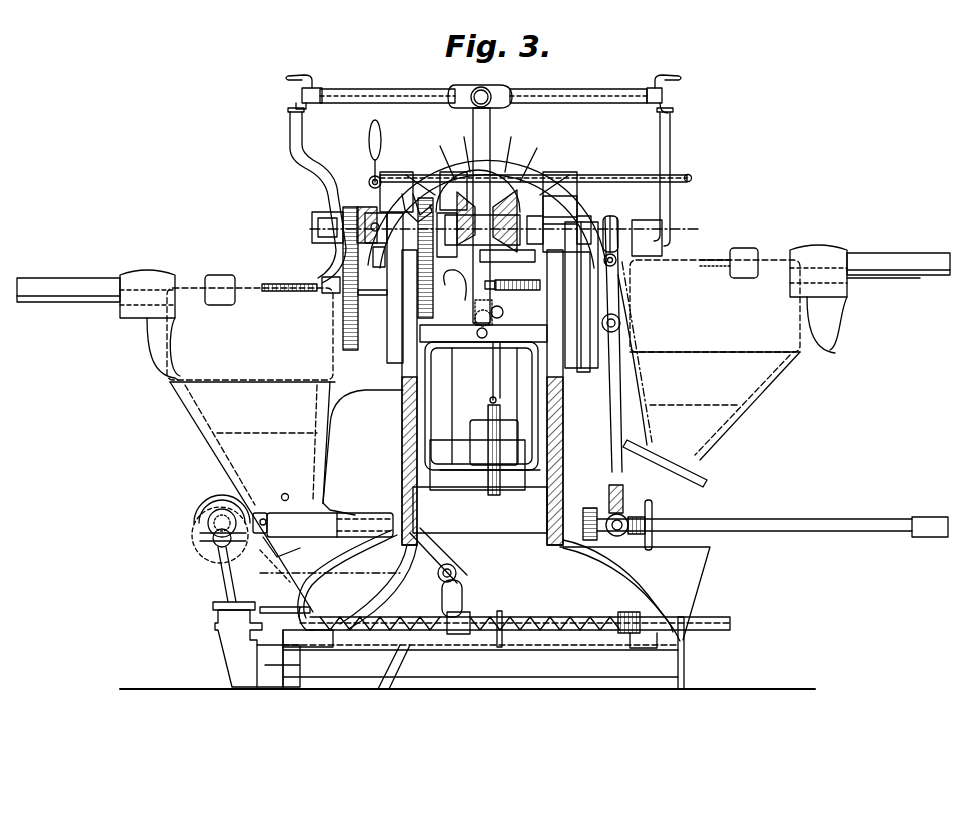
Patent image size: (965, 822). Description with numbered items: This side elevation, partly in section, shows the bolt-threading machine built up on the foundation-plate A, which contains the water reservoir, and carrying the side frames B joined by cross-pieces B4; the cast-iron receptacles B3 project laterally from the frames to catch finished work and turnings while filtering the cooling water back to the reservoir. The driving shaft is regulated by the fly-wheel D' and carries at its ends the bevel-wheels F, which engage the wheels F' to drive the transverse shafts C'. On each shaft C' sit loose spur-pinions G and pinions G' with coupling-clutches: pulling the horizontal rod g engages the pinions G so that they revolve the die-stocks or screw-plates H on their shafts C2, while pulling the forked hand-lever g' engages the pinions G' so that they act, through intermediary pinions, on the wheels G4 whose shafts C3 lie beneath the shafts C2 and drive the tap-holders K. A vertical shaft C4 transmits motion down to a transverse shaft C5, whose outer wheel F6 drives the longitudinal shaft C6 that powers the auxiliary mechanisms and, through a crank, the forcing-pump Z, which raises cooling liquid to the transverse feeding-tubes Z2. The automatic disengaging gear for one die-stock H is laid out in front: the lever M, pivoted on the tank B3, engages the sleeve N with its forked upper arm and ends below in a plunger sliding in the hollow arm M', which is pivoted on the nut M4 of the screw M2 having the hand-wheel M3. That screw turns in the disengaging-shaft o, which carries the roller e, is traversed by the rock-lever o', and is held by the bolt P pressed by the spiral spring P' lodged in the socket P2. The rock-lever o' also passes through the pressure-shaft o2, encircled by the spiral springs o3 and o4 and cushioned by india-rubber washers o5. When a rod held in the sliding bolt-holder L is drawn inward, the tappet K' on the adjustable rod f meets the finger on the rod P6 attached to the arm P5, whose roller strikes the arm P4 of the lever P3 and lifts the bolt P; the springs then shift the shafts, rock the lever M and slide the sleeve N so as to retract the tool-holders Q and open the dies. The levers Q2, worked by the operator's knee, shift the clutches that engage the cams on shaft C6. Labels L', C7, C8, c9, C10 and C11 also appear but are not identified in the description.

The forcing-pump Z is at (362, 386).
The transverse feeding-tube Z2 is at (483, 96).
The fly-wheel D' is at (487, 202).
The horizontal rod g is at (536, 194).
The forked hand-lever g' is at (382, 154).
The spur-pinion G is at (394, 197).
The pinion G' is at (425, 258).
The wheel G4 is at (360, 278).
The bevel-wheel F is at (492, 216).
The bevel-wheel F' is at (214, 503).
The wheel F6 is at (262, 510).
The transverse shaft C' is at (498, 234).
The screw-stock shaft C2 is at (485, 282).
The shaft of wheel G4 C3 is at (452, 310).
The vertical shaft C4 is at (337, 235).
The horizontal transverse shaft C5 is at (340, 515).
The longitudinal shaft C6 is at (208, 525).
The link C7 is at (270, 559).
The bearing block C8 is at (483, 312).
The curved arm C10 is at (380, 615).
The standard C11 is at (685, 612).
The lever c9 is at (438, 555).
The tap-holder K is at (291, 278).
The tappet K' is at (719, 278).
The sleeve N is at (611, 226).
The die-stock or screw-plate H is at (647, 238).
The sliding bolt-holder L is at (898, 263).
The bar L' is at (68, 290).
The rod f is at (883, 288).
The side frame B is at (408, 455).
The cast-iron tank or receptacle B3 is at (483, 436).
The cross-piece B4 is at (443, 372).
The lever M is at (612, 345).
The hollow arm M' is at (628, 499).
The screw M2 is at (592, 521).
The hand-wheel M3 is at (652, 510).
The nut M4 is at (621, 528).
The bolt P is at (480, 486).
The spiral spring P' is at (496, 448).
The socket P2 is at (496, 398).
The lever P3 is at (471, 313).
The lever-arm P4 is at (564, 285).
The arm P5 is at (532, 300).
The rod P6 is at (583, 312).
The tool-holder Q is at (210, 566).
The lever Q2 is at (740, 520).
The roller e is at (274, 510).
The disengaging-shaft o is at (515, 583).
The rock-lever o' is at (452, 580).
The pressure-shaft o2 is at (478, 612).
The spiral spring o3 is at (392, 629).
The spiral spring o4 is at (585, 612).
The india-rubber washer o5 is at (637, 623).
The foundation-plate A is at (467, 659).